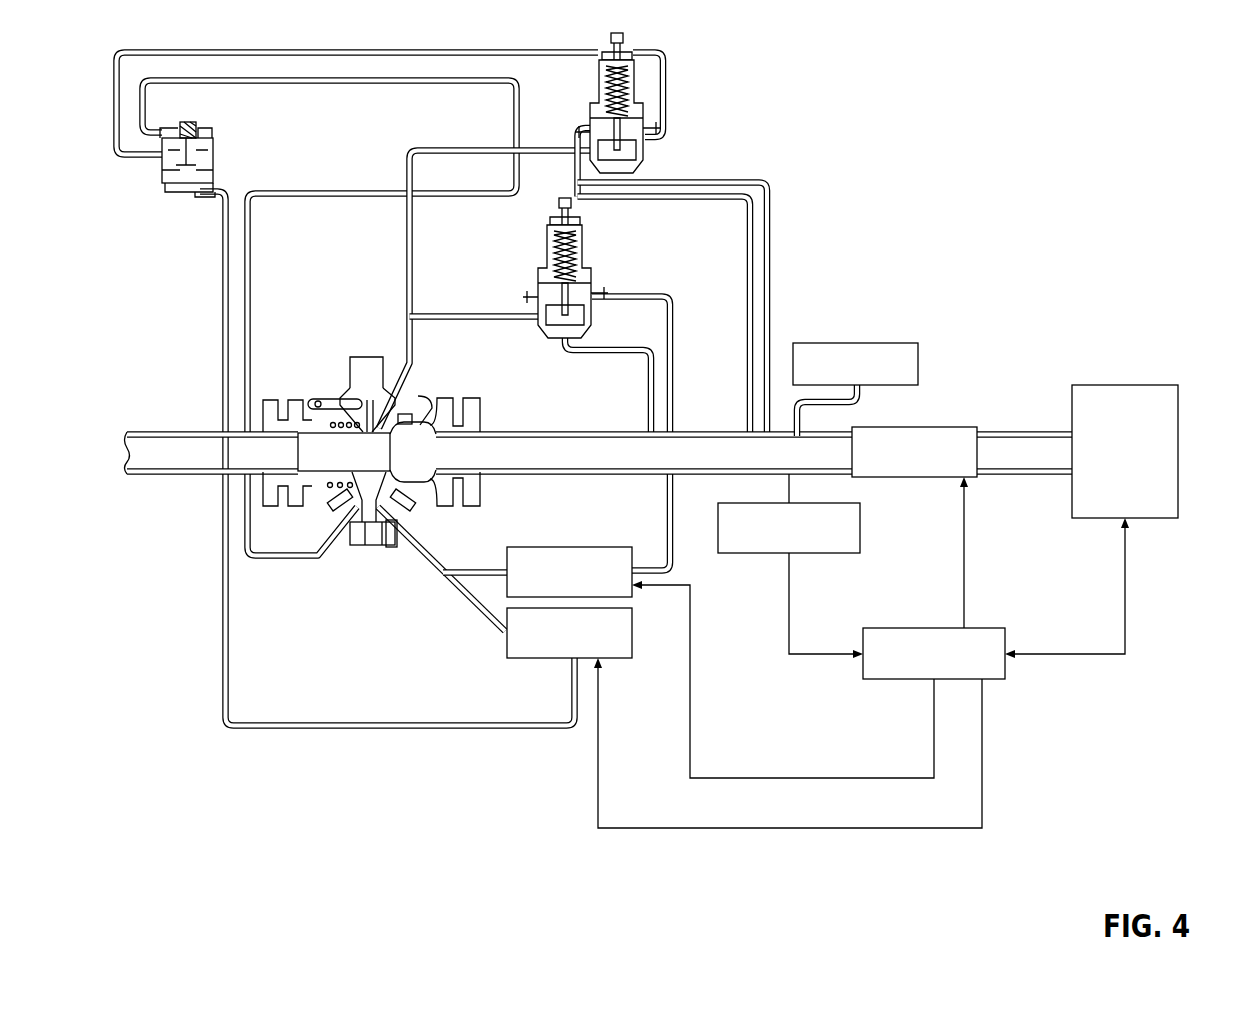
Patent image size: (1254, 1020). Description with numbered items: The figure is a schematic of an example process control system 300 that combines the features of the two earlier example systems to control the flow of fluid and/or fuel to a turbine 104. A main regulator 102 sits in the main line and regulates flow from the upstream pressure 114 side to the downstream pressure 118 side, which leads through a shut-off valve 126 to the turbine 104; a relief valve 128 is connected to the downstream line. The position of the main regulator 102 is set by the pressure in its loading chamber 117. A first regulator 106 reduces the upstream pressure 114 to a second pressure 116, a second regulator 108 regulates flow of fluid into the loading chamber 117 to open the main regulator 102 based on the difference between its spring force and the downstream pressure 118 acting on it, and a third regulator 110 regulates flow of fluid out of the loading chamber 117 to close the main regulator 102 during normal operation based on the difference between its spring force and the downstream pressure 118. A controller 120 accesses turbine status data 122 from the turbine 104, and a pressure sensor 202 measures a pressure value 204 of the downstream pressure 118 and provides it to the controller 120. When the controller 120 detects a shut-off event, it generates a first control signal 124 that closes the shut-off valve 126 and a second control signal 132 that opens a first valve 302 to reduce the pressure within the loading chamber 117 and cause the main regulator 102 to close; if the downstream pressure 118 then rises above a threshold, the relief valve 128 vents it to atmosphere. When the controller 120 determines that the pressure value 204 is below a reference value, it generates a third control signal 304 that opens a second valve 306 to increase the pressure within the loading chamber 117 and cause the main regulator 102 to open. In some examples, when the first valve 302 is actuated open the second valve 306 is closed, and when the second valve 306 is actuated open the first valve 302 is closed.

The process control system 300 is at (1040, 70).
The main regulator 102 is at (380, 547).
The turbine 104 is at (1078, 385).
The first regulator 106 is at (213, 152).
The second regulator 108 is at (638, 56).
The third regulator 110 is at (590, 268).
The upstream pressure 114 is at (205, 467).
The second pressure 116 is at (448, 50).
The loading chamber 117 is at (380, 420).
The downstream pressure 118 is at (575, 474).
The controller 120 is at (1007, 668).
The turbine status data 122 is at (1088, 593).
The first control signal 124 is at (965, 503).
The shut-off valve 126 is at (905, 427).
The relief valve 128 is at (838, 343).
The second control signal 132 is at (790, 758).
The pressure sensor 202 is at (860, 540).
The pressure value 204 is at (815, 602).
The first valve 302 is at (505, 562).
The third control signal 304 is at (690, 807).
The second valve 306 is at (505, 647).